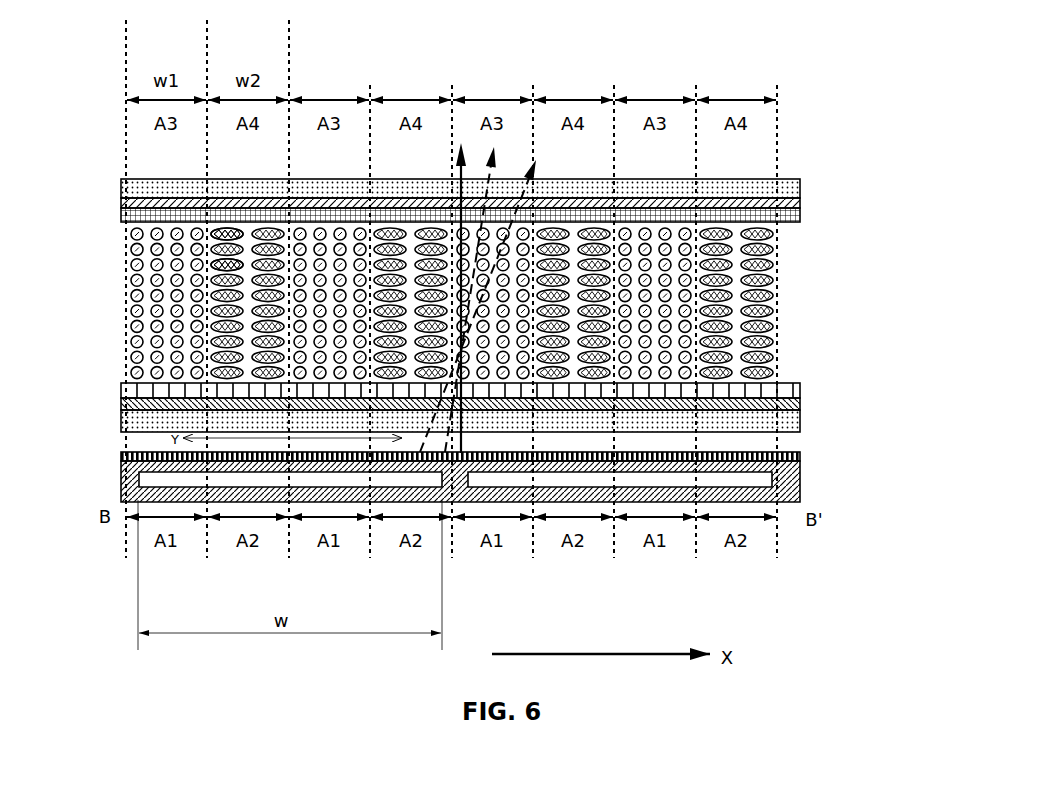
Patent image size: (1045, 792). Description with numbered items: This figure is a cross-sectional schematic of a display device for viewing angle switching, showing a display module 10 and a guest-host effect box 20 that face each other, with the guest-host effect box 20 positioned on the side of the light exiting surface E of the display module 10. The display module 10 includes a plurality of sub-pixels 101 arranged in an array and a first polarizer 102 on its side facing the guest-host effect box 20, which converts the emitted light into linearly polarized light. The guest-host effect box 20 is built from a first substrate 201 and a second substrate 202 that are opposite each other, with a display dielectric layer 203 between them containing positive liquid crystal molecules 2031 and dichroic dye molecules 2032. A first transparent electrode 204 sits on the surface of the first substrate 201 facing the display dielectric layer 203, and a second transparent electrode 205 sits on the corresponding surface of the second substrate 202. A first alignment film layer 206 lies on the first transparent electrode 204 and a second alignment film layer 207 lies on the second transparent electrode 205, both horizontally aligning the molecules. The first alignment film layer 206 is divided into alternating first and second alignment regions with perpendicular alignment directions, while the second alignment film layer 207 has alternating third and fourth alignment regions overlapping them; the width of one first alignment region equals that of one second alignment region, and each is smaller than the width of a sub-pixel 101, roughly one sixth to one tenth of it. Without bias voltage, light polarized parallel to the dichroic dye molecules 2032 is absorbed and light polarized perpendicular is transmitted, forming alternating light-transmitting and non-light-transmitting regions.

The display module 10 is at (447, 526).
The sub-pixel 101 is at (593, 478).
The first polarizer 102 is at (150, 455).
The guest-host effect box 20 is at (489, 308).
The first substrate 201 is at (509, 440).
The second substrate 202 is at (790, 193).
The display dielectric layer 203 is at (459, 261).
The positive liquid crystal molecules 2031 is at (227, 234).
The dichroic dye molecules 2032 is at (215, 265).
The first transparent electrode 204 is at (788, 405).
The second transparent electrode 205 is at (790, 204).
The first alignment film layer 206 is at (788, 386).
The second alignment film layer 207 is at (790, 219).
The light exiting surface E is at (482, 472).